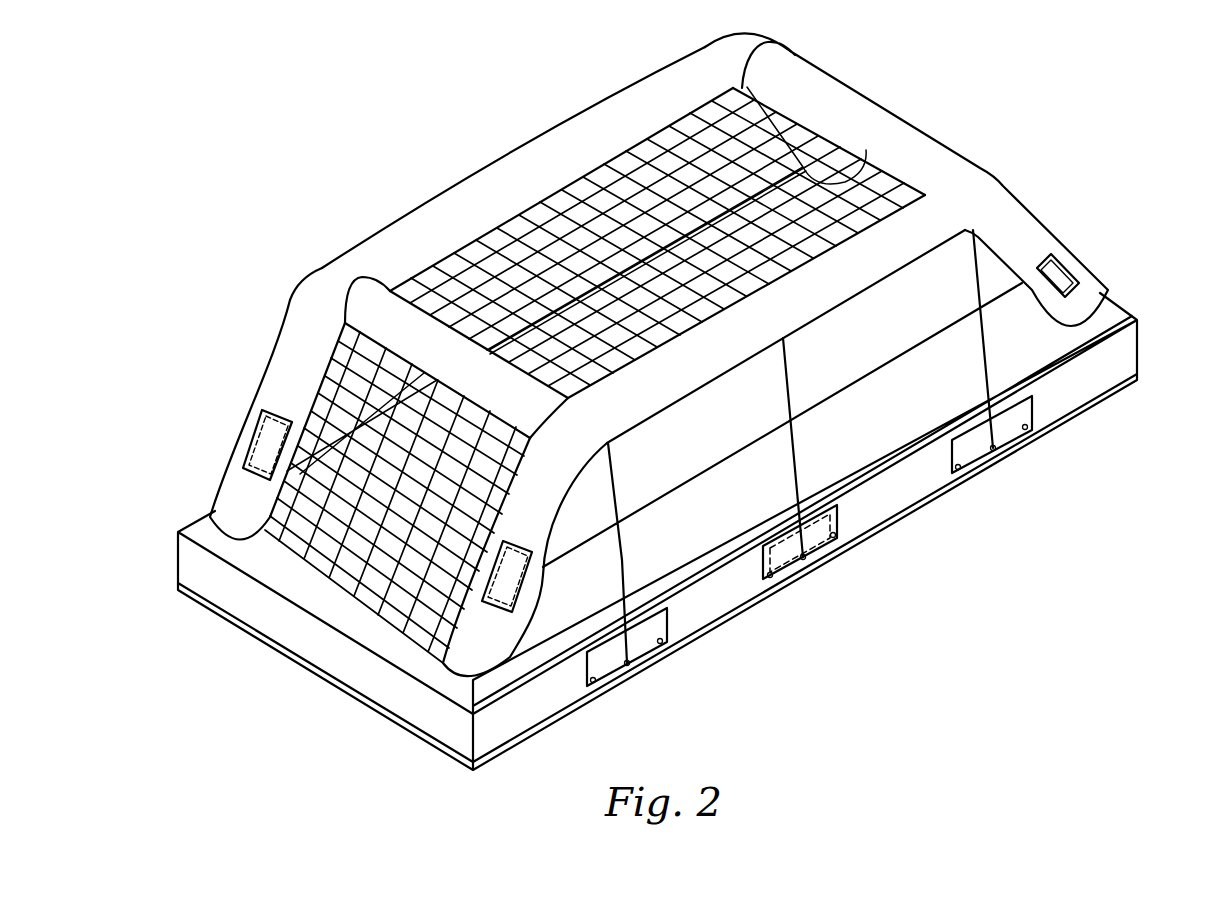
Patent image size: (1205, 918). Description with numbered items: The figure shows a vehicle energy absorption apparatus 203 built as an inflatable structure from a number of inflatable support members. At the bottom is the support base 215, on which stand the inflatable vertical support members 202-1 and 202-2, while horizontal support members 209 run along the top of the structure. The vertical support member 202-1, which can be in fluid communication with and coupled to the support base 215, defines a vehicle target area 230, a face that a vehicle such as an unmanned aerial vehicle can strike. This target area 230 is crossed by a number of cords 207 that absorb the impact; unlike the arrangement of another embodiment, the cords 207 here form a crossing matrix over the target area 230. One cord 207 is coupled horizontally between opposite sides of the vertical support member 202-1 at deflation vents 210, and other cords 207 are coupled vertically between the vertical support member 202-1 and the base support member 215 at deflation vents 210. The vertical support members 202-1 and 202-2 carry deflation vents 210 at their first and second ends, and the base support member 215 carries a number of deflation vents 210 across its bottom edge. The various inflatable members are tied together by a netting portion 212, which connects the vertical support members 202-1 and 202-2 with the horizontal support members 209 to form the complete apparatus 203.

The apparatus 203 is at (345, 195).
The vertical support member 202-1 is at (817, 293).
The vertical support member 202-2 is at (527, 147).
The cords 207 is at (740, 452).
The horizontal support members 209 is at (659, 354).
The deflation vents 210 is at (290, 386).
The netting portion 212 is at (527, 230).
The support base 215 is at (307, 647).
The target area 230 is at (727, 500).